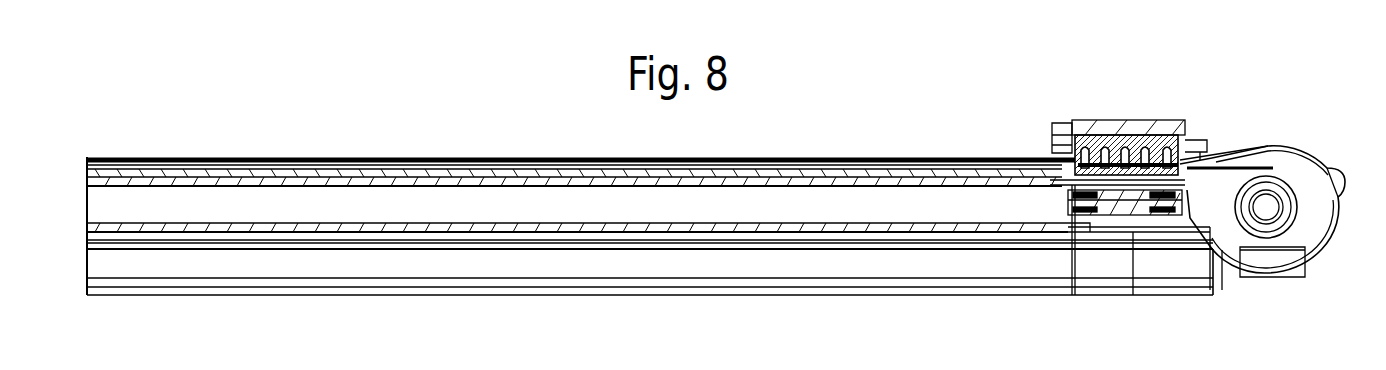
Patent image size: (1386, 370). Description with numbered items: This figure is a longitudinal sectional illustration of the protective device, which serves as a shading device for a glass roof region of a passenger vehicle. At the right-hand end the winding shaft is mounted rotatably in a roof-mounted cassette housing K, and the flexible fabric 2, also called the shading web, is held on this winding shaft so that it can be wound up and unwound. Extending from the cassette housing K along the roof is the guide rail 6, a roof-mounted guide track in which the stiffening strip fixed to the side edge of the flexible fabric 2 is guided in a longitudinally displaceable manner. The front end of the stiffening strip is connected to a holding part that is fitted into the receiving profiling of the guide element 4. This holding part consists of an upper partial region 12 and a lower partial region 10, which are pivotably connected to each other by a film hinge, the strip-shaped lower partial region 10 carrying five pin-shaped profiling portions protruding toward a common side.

The guide rail 6 is at (800, 157).
The guide element 4 is at (1134, 118).
The upper partial region 12 is at (1095, 133).
The lower partial region 10 is at (1124, 215).
The flexible fabric 2 is at (1234, 165).
The cassette housing K is at (1320, 164).